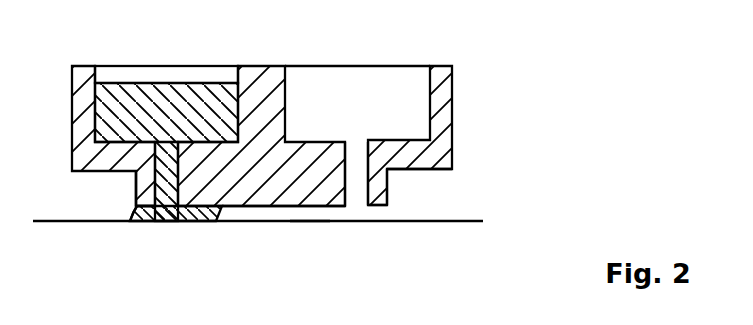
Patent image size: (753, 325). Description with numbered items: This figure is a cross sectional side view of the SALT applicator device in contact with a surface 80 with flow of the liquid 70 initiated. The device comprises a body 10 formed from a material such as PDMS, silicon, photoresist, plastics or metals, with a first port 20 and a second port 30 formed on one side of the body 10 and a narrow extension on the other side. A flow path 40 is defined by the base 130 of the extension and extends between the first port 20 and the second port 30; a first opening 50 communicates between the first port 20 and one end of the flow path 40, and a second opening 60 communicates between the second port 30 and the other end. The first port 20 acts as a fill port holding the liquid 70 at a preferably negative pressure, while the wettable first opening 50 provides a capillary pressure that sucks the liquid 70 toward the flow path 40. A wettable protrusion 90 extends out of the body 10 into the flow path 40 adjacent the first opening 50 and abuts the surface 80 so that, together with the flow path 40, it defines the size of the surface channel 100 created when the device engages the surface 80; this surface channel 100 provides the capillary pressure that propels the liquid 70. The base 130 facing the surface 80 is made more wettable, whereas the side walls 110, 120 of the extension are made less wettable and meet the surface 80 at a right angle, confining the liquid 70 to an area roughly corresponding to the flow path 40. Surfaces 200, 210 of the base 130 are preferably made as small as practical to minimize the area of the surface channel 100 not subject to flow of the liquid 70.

The body 10 is at (265, 71).
The first port 20 is at (161, 72).
The second port 30 is at (372, 75).
The flow path 40 is at (337, 207).
The first opening 50 is at (138, 183).
The second opening 60 is at (357, 156).
The liquid 70 is at (96, 113).
The surface 80 is at (483, 221).
The protrusion 90 is at (178, 221).
The surface channel 100 is at (256, 207).
The side wall 110 is at (137, 203).
The side wall 120 is at (390, 188).
The base 130 is at (313, 207).
The surface of the base 200 is at (135, 223).
The surface of the base 210 is at (381, 205).